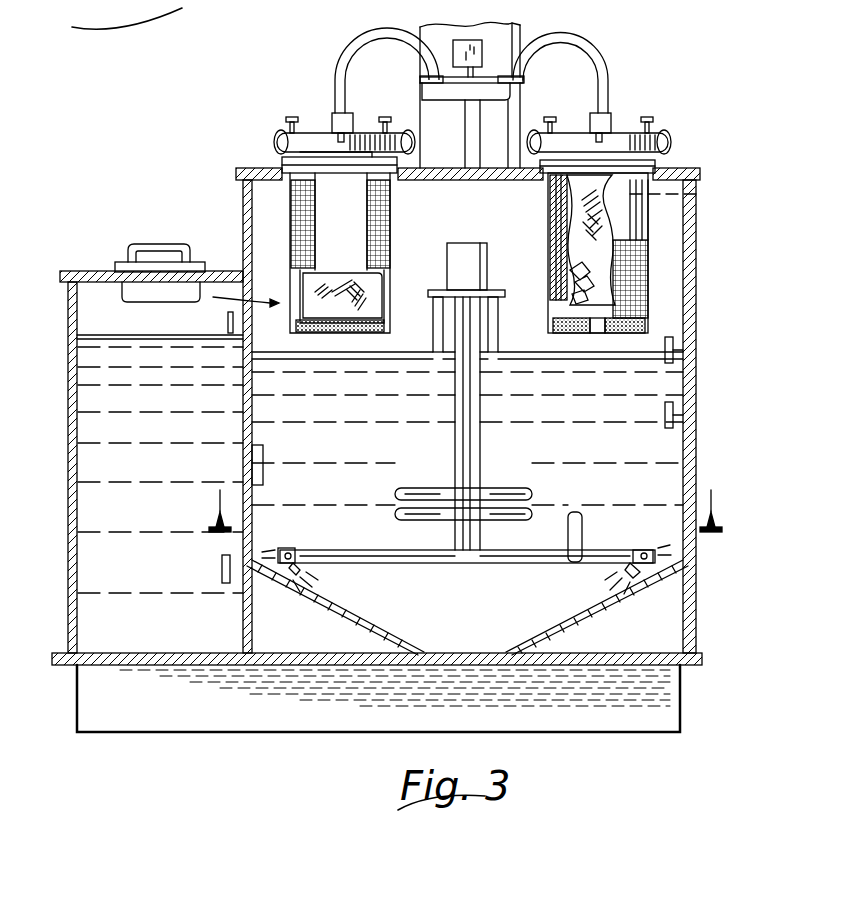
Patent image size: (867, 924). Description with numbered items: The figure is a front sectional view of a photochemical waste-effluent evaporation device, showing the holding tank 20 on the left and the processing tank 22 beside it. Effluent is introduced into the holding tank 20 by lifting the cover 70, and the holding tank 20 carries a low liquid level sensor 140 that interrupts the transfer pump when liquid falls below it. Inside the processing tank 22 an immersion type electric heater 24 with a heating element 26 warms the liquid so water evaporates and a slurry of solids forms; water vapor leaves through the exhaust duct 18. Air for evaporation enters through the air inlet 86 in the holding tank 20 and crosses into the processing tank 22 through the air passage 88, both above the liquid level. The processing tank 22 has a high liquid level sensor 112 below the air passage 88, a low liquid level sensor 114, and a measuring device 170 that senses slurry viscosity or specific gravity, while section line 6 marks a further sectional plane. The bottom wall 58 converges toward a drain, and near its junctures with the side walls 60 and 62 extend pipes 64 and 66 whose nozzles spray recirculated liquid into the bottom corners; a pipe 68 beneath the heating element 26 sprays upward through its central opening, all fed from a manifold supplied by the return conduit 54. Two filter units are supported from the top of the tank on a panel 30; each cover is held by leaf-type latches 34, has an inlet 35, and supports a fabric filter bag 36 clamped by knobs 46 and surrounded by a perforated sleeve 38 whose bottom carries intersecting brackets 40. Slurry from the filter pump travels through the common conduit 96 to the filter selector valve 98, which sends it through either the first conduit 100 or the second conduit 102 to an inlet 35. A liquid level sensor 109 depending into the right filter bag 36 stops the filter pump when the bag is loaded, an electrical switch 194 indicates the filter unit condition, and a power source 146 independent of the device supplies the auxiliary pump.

The section line 6— 6 is at (228, 470).
The exhaust duct 18 is at (507, 100).
The holding tank 20 is at (88, 432).
The processing tank 22 is at (393, 433).
The electric heater 24 is at (485, 433).
The heating element 26 is at (530, 483).
The panel 30 is at (257, 167).
The leaf-type latches 34 is at (277, 137).
The inlet 35 is at (350, 113).
The filter bag 36 is at (363, 292).
The perforated sleeve 38 is at (296, 212).
The intersecting brackets 40 is at (387, 118).
The knobs 46 is at (292, 116).
The return conduit 54 is at (585, 522).
The bottom wall 58 is at (333, 600).
The side wall 60 is at (252, 414).
The side wall 62 is at (683, 443).
The pipe 64 is at (290, 548).
The pipe 66 is at (638, 550).
The pipe 68 is at (460, 563).
The cover 70 is at (115, 265).
The air inlet 86 is at (122, 290).
The air passage 88 is at (245, 318).
The common conduit 96 is at (468, 123).
The filter selector valve 98 is at (467, 42).
The first conduit 100 is at (400, 33).
The second conduit 102 is at (570, 40).
The liquid level sensor 109 is at (577, 187).
The high liquid level sensor 112 is at (675, 345).
The low liquid level sensor 114 is at (675, 413).
The low liquid level sensor 140 is at (222, 570).
The power source 146 is at (228, 318).
The measuring device 170 is at (263, 453).
The electrical switch 194 is at (683, 201).